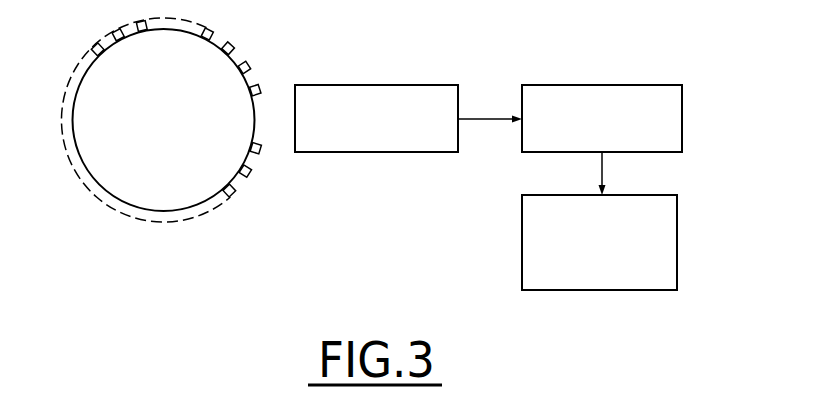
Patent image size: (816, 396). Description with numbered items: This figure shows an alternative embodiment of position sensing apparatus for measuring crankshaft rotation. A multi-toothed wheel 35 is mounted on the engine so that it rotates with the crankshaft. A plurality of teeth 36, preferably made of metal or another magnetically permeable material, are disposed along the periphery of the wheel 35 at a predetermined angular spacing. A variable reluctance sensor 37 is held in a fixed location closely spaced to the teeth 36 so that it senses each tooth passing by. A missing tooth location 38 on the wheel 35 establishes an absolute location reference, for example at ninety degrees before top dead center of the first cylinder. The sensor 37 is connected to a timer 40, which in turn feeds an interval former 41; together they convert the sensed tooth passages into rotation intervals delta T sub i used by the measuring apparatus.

The multi-toothed wheel 35 is at (84, 84).
The teeth 36 is at (213, 31).
The variable reluctance sensor 37 is at (411, 84).
The missing tooth location 38 is at (263, 126).
The timer 40 is at (682, 123).
The interval former 41 is at (677, 235).